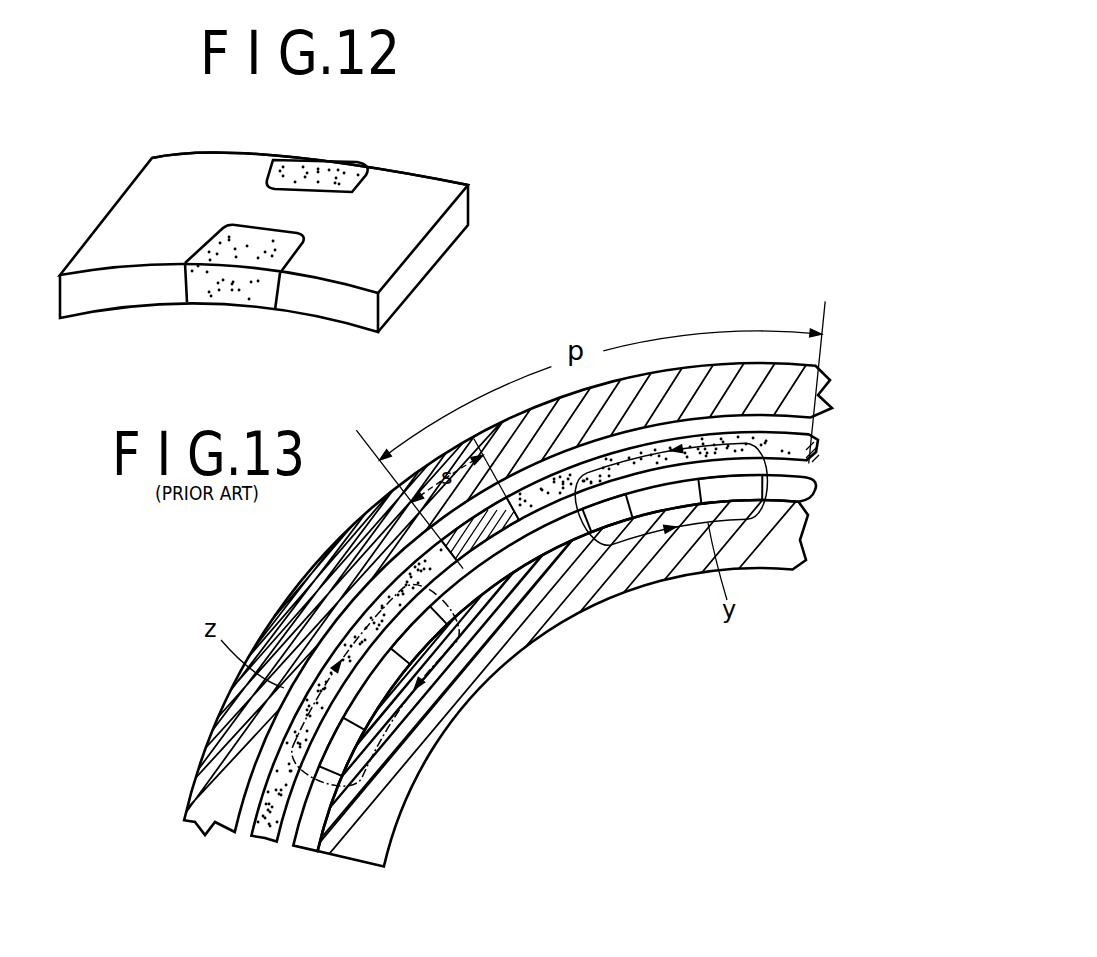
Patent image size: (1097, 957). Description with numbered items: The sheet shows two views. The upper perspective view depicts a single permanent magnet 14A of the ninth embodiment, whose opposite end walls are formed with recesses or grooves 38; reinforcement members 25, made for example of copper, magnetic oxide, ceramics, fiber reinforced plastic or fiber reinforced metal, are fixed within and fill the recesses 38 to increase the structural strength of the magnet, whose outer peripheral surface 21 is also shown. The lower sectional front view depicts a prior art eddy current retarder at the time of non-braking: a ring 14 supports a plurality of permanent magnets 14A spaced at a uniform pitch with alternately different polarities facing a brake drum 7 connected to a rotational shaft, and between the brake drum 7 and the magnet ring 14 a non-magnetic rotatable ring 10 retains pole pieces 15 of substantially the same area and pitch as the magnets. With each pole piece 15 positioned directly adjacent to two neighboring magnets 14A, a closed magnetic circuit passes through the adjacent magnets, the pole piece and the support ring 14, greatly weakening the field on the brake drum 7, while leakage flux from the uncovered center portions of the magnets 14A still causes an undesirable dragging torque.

In FIG. 13, the brake drum 7 is at (308, 618).
In FIG. 13, the non-magnetic rotatable ring 10 is at (270, 850).
In FIG. 13, the ring 14 is at (553, 600).
In FIG. 12, the permanent magnets 14A is at (180, 152).
In FIG. 13, the permanent magnets 14A is at (798, 492).
In FIG. 13, the pole pieces 15 is at (797, 453).
In FIG. 12, the outer peripheral surface 21 is at (133, 207).
In FIG. 12, the reinforcement members 25 is at (305, 170).
In FIG. 12, the recesses or grooves 38 is at (357, 170).